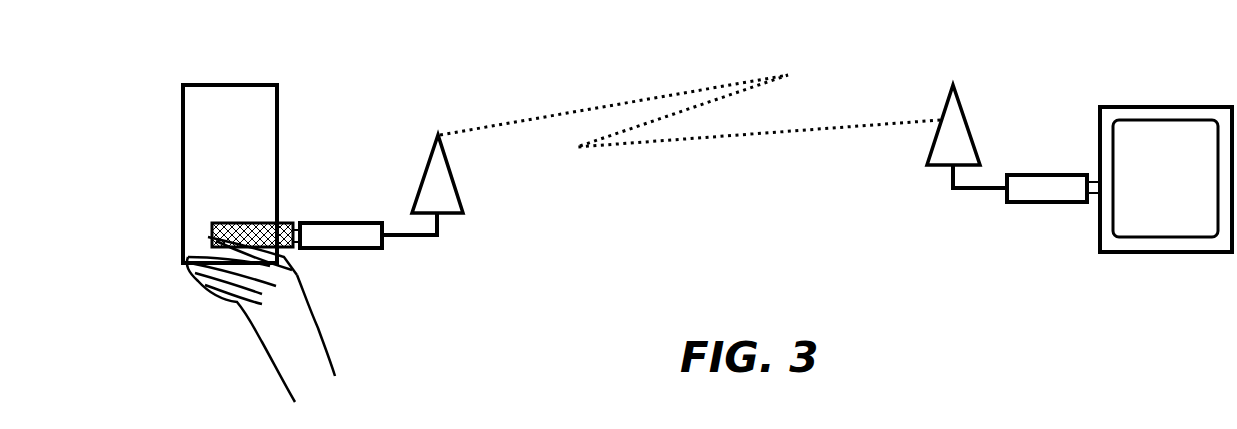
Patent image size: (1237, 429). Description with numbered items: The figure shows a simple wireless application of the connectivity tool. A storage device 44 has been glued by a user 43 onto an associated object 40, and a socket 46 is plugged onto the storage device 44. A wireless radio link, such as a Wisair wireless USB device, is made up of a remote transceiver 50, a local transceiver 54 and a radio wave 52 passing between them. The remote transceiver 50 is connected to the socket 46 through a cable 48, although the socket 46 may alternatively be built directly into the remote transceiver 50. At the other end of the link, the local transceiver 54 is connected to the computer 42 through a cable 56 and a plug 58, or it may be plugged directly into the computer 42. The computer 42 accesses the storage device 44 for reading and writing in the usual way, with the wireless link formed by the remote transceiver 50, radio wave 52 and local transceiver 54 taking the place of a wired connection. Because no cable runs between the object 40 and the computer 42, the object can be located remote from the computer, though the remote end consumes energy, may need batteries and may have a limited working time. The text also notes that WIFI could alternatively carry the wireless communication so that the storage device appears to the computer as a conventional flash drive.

The associated object 40 is at (277, 107).
The computer 42 is at (1100, 98).
The user 43 is at (312, 345).
The storage device 44 is at (228, 222).
The socket 46 is at (333, 223).
The cable 48 is at (402, 238).
The remote transceiver 50 is at (463, 213).
The radio wave 52 is at (670, 145).
The local transceiver 54 is at (960, 100).
The cable 56 is at (985, 190).
The plug 58 is at (1043, 175).